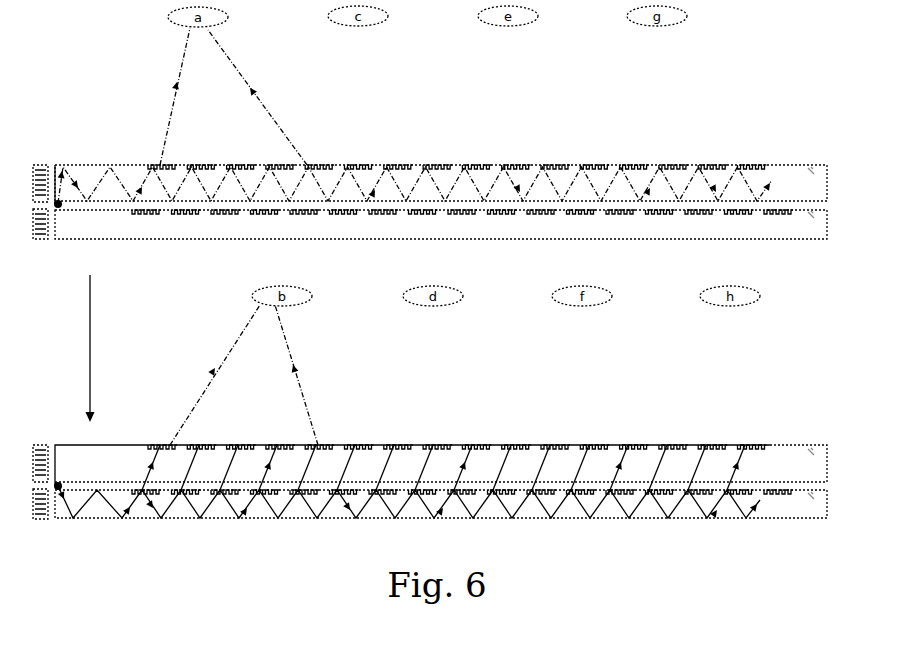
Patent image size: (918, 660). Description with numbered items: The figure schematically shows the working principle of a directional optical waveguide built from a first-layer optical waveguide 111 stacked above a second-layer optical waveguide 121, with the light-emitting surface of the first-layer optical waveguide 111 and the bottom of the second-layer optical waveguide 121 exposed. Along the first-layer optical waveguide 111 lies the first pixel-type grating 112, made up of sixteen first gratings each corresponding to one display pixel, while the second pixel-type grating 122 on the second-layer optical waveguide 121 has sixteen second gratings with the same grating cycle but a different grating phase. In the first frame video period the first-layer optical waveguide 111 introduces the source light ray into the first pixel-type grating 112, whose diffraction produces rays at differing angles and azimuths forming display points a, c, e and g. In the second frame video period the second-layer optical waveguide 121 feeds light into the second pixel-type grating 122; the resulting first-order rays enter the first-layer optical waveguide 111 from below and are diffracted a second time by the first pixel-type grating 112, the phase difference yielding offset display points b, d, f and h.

The first-layer optical waveguide 111 is at (815, 181).
The first pixel-type grating 112 is at (769, 165).
The second-layer optical waveguide 121 is at (815, 226).
The second pixel-type grating 122 is at (790, 213).